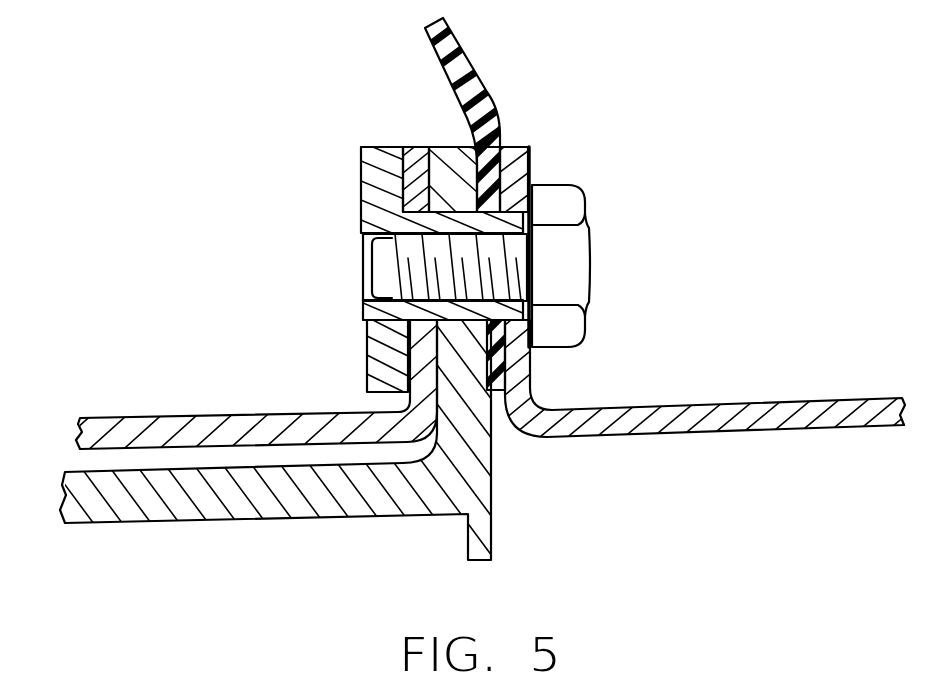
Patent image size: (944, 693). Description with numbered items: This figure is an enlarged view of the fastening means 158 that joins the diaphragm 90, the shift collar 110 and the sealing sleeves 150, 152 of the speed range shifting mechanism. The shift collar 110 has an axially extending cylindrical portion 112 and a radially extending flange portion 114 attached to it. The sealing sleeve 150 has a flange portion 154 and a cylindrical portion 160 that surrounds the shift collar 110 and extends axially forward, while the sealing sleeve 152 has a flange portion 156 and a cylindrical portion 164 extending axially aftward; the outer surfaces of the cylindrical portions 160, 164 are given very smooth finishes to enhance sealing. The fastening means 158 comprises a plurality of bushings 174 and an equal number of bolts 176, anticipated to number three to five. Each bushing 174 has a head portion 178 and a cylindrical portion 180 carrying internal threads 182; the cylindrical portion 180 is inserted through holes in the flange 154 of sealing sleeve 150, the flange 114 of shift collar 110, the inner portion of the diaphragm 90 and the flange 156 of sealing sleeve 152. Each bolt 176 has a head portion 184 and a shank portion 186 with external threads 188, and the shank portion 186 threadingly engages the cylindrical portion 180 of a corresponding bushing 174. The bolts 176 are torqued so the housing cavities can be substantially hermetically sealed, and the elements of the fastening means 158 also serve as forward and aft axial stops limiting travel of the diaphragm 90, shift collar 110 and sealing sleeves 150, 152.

The diaphragm 90 is at (477, 47).
The shift collar 110 is at (276, 346).
The cylindrical portion 112 is at (283, 505).
The flange portion 114 is at (447, 152).
The sealing sleeve 150 is at (232, 383).
The sealing sleeve 152 is at (705, 346).
The flange portion 154 is at (418, 158).
The flange portion 156 is at (520, 145).
The fastening means 158 is at (345, 158).
The cylindrical portion 160 is at (206, 420).
The cylindrical portion 164 is at (812, 400).
The bushing 174 is at (360, 215).
The bolt 176 is at (606, 244).
The head portion 178 is at (373, 365).
The cylindrical portion 180 is at (510, 313).
The internal threads 182 is at (402, 300).
The head portion 184 is at (563, 247).
The shank portion 186 is at (408, 250).
The external threads 188 is at (443, 308).